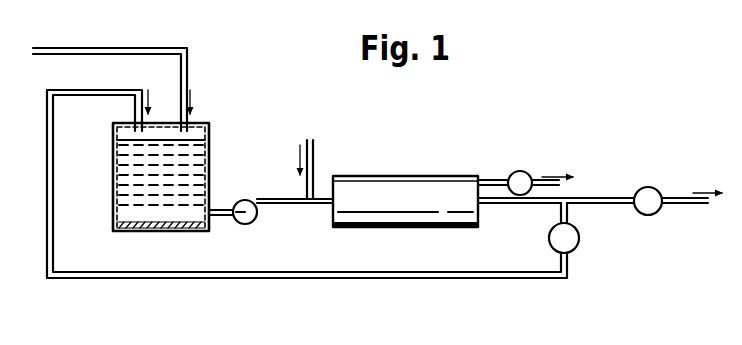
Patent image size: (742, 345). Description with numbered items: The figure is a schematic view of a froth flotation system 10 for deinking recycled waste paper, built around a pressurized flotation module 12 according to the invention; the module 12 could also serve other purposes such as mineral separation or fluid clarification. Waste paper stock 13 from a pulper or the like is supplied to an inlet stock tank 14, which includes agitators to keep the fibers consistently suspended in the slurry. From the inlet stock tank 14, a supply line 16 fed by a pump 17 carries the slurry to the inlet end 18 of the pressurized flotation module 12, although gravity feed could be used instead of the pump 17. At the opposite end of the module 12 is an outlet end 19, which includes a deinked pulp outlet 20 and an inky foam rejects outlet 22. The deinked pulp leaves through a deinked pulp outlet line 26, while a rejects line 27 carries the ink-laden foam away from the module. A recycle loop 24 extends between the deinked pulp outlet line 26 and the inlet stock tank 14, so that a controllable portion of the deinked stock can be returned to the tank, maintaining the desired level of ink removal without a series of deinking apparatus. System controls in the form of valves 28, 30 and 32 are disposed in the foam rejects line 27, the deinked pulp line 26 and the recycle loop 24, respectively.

The froth flotation system 10 is at (397, 170).
The pressurized flotation module 12 is at (402, 214).
The waste paper stock 13 is at (118, 159).
The inlet stock tank 14 is at (113, 184).
The supply line 16 is at (283, 204).
The pump 17 is at (245, 224).
The inlet end 18 is at (330, 212).
The outlet end 19 is at (478, 214).
The deinked pulp outlet 20 is at (482, 206).
The inky foam rejects outlet 22 is at (482, 178).
The recycle loop 24 is at (185, 279).
The deinked pulp outlet line 26 is at (602, 196).
The rejects line 27 is at (541, 177).
The valve 28 is at (519, 171).
The valve 30 is at (650, 216).
The valve 32 is at (577, 238).